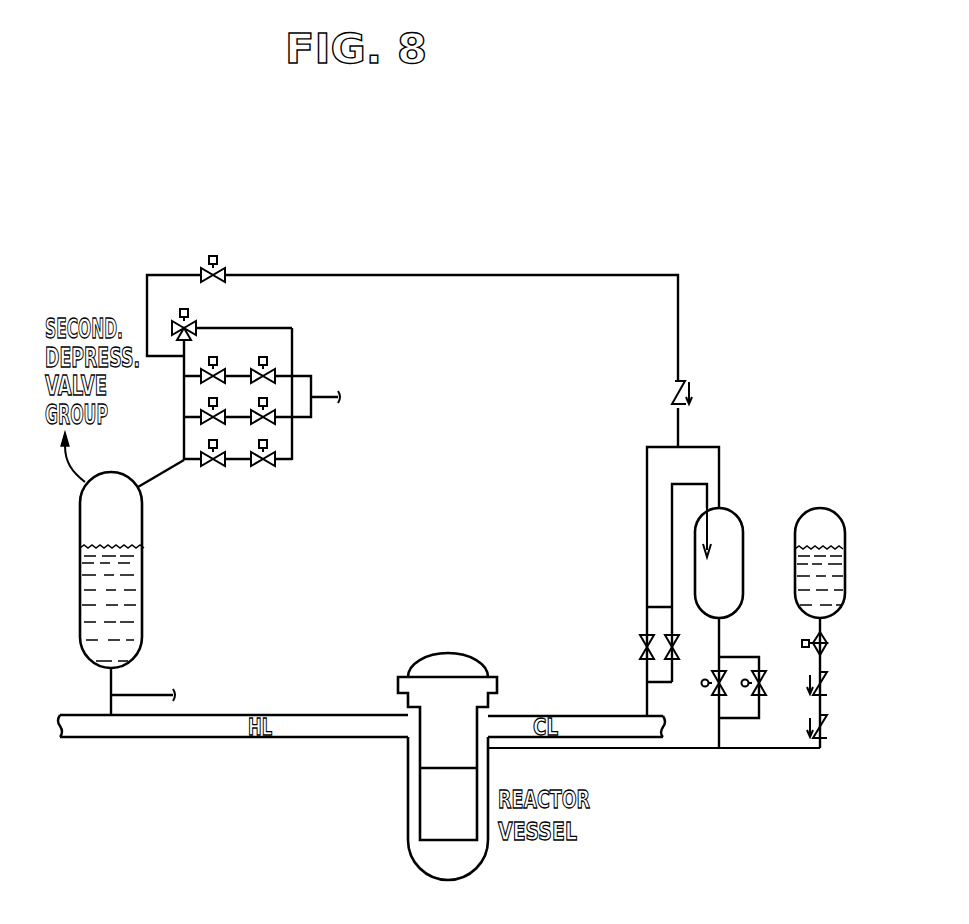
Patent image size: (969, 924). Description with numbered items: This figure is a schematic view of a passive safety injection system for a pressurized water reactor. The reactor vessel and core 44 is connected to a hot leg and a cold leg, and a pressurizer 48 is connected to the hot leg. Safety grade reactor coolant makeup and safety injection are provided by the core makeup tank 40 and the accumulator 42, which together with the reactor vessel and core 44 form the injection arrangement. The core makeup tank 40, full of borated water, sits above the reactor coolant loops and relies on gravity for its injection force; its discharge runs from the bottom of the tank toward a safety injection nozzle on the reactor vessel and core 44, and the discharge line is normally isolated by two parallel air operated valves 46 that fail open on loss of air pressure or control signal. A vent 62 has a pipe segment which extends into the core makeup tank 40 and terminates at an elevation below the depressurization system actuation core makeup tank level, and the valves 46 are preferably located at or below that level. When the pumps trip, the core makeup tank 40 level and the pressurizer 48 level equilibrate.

The core makeup tank 40 is at (733, 507).
The accumulator 42 is at (835, 507).
The reactor vessel and core 44 is at (407, 782).
The air operated valves 46 is at (645, 650).
The pressurizer 48 is at (142, 561).
The vent 62 is at (672, 573).